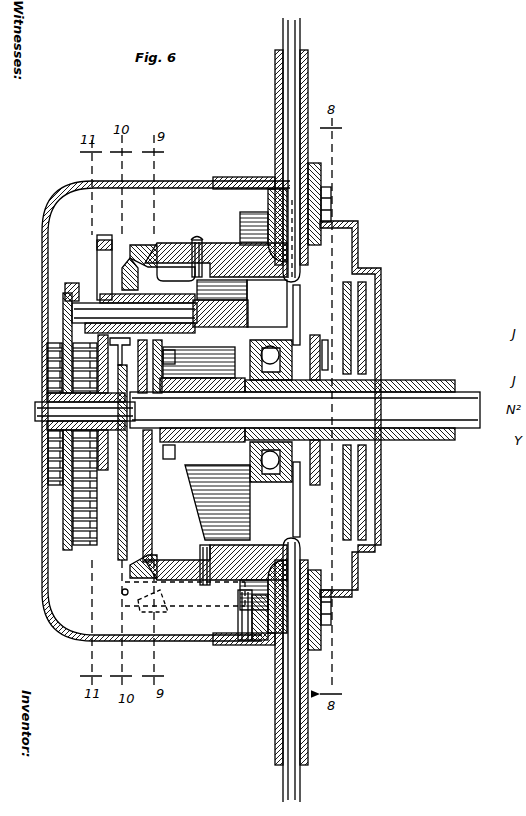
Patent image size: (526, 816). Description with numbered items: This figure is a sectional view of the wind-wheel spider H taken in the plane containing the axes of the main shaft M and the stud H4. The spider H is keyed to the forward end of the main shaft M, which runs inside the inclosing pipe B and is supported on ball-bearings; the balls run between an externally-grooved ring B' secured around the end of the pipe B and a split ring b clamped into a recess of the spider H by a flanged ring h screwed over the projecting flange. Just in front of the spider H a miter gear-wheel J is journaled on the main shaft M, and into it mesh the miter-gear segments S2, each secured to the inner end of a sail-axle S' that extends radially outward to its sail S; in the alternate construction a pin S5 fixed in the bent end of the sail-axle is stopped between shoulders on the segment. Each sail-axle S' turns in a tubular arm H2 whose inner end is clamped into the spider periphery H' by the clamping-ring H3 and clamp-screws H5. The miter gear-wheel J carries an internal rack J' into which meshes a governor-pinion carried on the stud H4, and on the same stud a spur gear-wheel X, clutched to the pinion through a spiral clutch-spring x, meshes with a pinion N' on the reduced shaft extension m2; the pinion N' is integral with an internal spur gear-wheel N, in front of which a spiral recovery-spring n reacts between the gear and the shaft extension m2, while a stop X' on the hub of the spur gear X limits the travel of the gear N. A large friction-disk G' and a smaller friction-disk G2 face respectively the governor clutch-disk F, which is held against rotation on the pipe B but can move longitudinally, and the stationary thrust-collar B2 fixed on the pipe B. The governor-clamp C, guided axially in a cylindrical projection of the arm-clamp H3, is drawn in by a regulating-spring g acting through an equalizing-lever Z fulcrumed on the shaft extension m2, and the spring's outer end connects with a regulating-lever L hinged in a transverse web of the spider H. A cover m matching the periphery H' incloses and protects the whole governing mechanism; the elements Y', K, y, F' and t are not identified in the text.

The cover m is at (43, 548).
The sail-axle S' is at (291, 410).
The tubular arm H2 is at (276, 116).
The clamping-ring H3 is at (321, 170).
The clamp-screws H5 is at (331, 205).
The spider periphery H' is at (244, 394).
The spider H is at (263, 411).
The miter-gear segment S2 is at (210, 258).
The pin S5 is at (192, 240).
The sail S is at (216, 601).
The spiral clutch-spring x is at (128, 258).
The spur gear-wheel X is at (104, 251).
The bracket Y' is at (65, 278).
The stop X' is at (102, 309).
The internal rack J' is at (140, 300).
The internal spur gear-wheel N is at (53, 421).
The recovery-spring n is at (47, 350).
The pinion N' is at (35, 457).
The shaft extension m2 is at (48, 412).
The equalizing-lever Z is at (122, 450).
The miter gear-wheel J is at (151, 451).
The main shaft M is at (305, 410).
The externally-grooved ring B' is at (209, 410).
The inclosing pipe B is at (354, 420).
The gear K is at (208, 505).
The key y is at (142, 400).
The split ring b is at (227, 426).
The flanged ring h is at (283, 413).
The stud H4 is at (265, 338).
The thrust-collar B2 is at (297, 320).
The smaller friction-disk G2 is at (316, 336).
The regulating-spring g is at (326, 354).
The governor-clamp C is at (382, 340).
The large friction-disk G' is at (358, 400).
The plate F' is at (381, 327).
The governor clutch-disk F is at (378, 492).
The regulating-lever L is at (183, 597).
The stud t is at (240, 600).